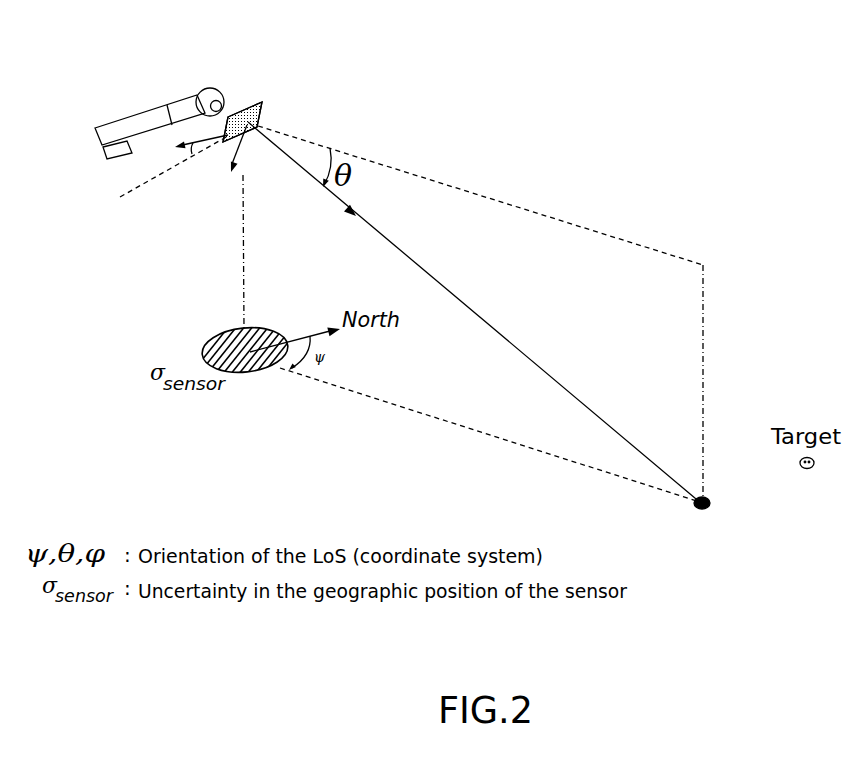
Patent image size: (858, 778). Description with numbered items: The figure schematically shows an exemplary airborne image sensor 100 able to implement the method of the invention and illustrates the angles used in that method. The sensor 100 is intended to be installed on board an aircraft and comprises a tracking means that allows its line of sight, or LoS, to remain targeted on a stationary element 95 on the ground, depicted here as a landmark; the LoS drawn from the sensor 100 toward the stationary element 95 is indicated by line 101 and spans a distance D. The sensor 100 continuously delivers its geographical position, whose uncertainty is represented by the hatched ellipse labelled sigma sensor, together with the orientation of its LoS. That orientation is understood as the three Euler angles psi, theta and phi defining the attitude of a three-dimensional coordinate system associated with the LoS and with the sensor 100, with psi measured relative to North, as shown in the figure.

The image sensor 100 is at (233, 90).
The line of sight (LoS) to landmark 101 is at (413, 258).
The stationary element 95 is at (702, 510).